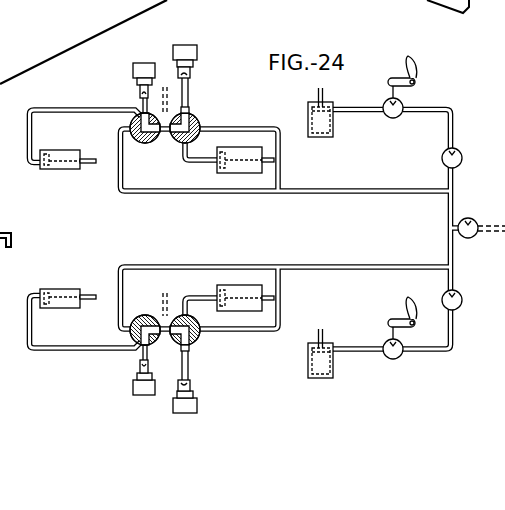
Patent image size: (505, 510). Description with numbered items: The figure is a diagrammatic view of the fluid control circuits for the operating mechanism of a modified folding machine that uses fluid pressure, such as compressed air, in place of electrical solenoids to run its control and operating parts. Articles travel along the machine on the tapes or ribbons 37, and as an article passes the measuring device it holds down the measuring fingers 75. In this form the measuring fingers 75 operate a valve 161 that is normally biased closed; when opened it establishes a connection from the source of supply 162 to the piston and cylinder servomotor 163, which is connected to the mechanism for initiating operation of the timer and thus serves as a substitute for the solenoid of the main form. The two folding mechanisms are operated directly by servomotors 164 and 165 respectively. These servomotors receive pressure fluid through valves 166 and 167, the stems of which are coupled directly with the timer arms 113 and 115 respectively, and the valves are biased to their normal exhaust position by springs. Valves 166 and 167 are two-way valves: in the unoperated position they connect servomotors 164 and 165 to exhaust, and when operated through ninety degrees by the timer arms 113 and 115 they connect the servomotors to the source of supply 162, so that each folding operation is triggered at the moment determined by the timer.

The tapes or ribbons 37 is at (37, 65).
The measuring fingers 75 is at (407, 58).
The shaft 113 is at (188, 92).
The shaft 115 is at (140, 108).
The valve 161 is at (393, 118).
The source of supply 162 is at (470, 219).
The piston and cylinder servomotor 163 is at (309, 119).
The servomotor 164 is at (245, 174).
The servomotor 165 is at (67, 170).
The valve 166 is at (200, 128).
The valve 167 is at (148, 135).